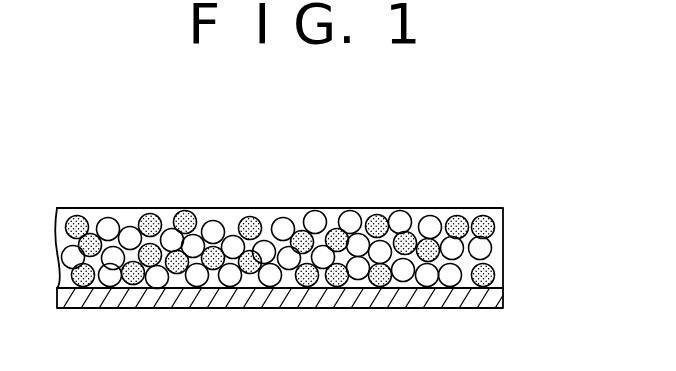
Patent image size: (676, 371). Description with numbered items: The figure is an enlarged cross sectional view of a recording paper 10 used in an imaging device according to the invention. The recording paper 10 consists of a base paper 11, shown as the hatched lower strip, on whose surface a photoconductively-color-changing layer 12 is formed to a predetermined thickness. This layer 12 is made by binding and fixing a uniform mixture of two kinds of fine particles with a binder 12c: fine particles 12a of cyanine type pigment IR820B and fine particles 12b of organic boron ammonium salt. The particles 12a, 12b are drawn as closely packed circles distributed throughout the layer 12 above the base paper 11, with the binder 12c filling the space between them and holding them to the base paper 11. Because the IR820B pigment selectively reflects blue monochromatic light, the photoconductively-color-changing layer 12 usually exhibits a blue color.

The recording paper 10 is at (503, 190).
The base paper 11 is at (506, 296).
The photoconductively-color-changing layer 12 is at (435, 203).
The fine particles of cyanine type pigment IR820B 12a is at (377, 219).
The fine particles of organic boron ammonium salt 12b is at (287, 222).
The binder 12c is at (207, 213).